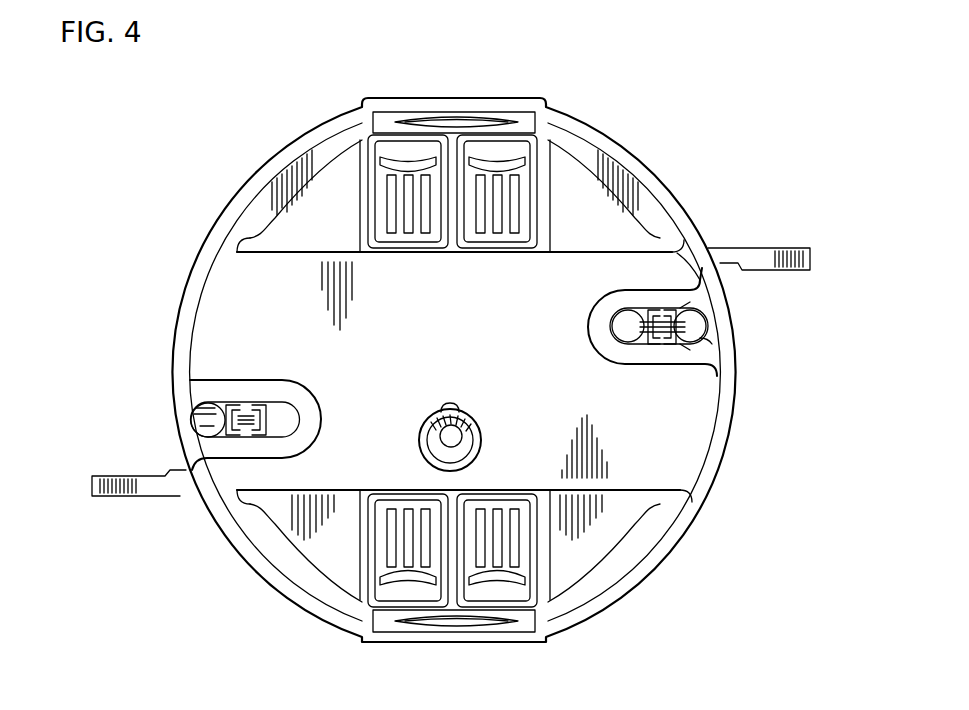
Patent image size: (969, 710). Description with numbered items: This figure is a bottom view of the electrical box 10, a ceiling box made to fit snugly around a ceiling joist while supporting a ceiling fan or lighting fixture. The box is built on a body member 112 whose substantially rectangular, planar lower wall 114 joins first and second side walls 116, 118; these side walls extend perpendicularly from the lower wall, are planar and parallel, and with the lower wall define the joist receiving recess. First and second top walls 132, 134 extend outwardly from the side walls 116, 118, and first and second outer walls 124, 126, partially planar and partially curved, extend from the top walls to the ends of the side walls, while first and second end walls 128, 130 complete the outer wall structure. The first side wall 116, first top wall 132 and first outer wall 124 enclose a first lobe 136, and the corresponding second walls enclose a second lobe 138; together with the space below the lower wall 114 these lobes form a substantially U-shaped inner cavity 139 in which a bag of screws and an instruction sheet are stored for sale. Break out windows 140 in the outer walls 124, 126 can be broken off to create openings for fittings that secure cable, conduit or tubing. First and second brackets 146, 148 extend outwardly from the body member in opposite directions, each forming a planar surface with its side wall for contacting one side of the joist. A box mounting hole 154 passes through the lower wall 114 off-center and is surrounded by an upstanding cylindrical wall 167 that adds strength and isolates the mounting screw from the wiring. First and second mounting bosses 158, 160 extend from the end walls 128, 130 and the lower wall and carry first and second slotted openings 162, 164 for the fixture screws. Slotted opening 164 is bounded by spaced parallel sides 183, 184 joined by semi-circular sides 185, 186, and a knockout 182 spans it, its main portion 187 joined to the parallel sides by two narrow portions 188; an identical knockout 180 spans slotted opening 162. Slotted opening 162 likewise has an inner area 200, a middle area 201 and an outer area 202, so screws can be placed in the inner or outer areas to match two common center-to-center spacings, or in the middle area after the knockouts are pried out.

The electrical box 10 is at (238, 114).
The body member 112 is at (278, 590).
The lower wall 114 is at (465, 312).
The first side wall 116 is at (250, 236).
The second side wall 118 is at (688, 500).
The first outer wall 124 is at (388, 100).
The second outer wall 126 is at (515, 652).
The first end wall 128 is at (733, 445).
The second end wall 130 is at (178, 304).
The first top wall 132 is at (318, 180).
The second top wall 134 is at (285, 533).
The first lobe 136 is at (596, 268).
The second lobe 138 is at (593, 557).
The U-shaped inner cavity 139 is at (610, 192).
The break out windows 140 is at (472, 122).
The first bracket 146 is at (782, 248).
The second bracket 148 is at (122, 497).
The box mounting hole 154 is at (457, 438).
The first mounting boss 158 is at (212, 382).
The second mounting boss 160 is at (725, 405).
The first slotted opening 162 is at (300, 416).
The second slotted opening 164 is at (603, 343).
The upstanding cylindrical wall 167 is at (418, 424).
The first knockout 180 is at (205, 434).
The second knockout 182 is at (670, 308).
The first parallel side 183 is at (600, 305).
The second parallel side 184 is at (720, 338).
The first semi-circular side 185 is at (603, 322).
The second semi-circular side 186 is at (707, 330).
The main portion 187 is at (680, 360).
The narrow portions 188 is at (650, 288).
The inner area 200 is at (290, 388).
The middle area 201 is at (290, 452).
The outer area 202 is at (200, 408).